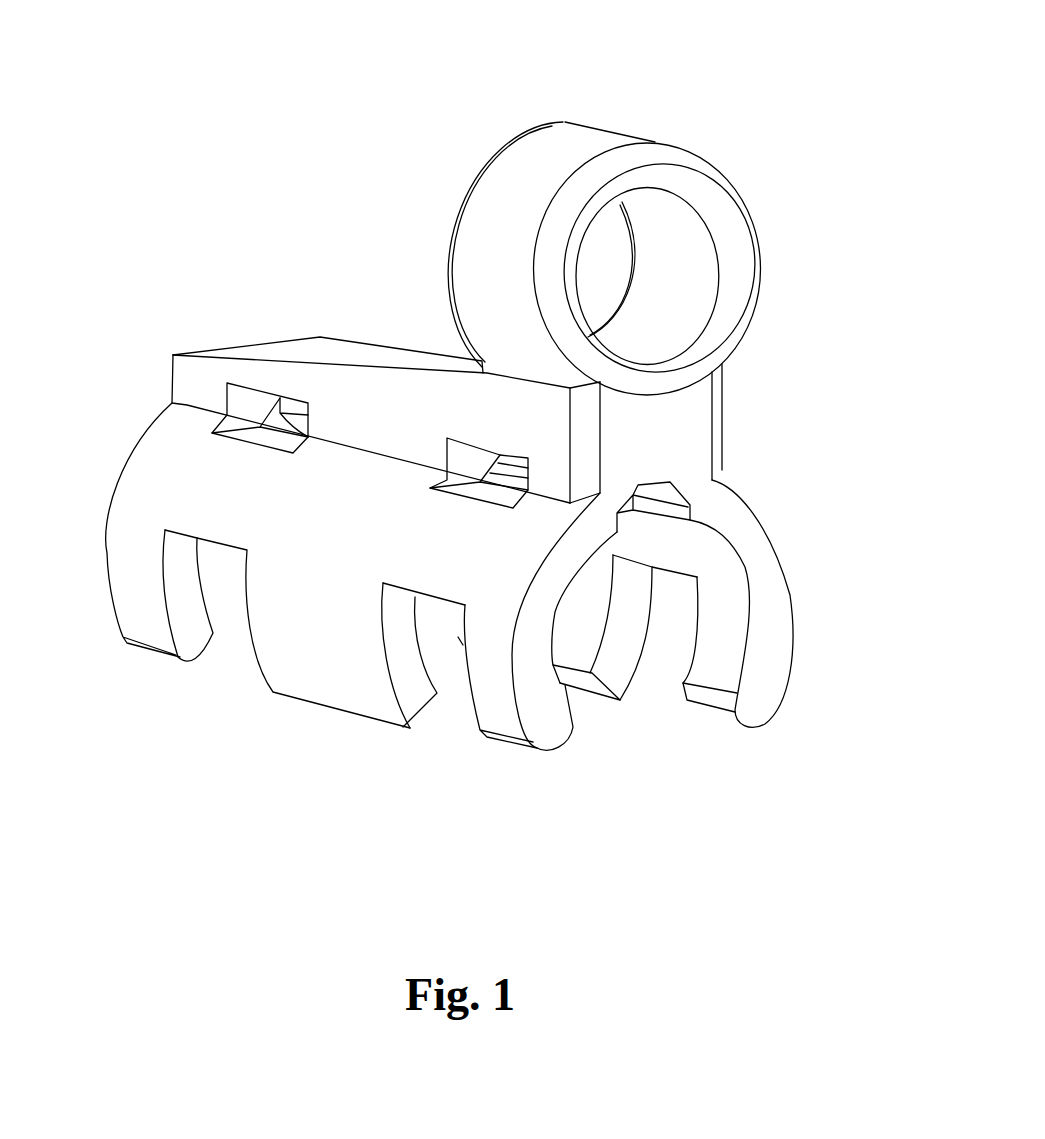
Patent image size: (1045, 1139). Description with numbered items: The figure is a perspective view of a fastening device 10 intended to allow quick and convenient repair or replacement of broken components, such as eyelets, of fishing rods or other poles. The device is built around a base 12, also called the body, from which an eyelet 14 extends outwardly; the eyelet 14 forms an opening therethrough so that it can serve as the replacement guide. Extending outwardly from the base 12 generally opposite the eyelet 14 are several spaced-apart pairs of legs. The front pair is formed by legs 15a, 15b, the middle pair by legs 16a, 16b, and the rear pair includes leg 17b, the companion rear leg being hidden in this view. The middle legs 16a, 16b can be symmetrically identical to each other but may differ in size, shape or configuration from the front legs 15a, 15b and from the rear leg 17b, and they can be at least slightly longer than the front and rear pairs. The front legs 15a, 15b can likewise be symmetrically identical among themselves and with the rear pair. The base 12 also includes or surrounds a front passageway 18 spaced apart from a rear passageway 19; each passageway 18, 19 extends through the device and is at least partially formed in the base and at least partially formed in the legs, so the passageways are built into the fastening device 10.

The fastening device 10 is at (226, 87).
The base 12 is at (362, 410).
The eyelet 14 is at (595, 147).
The front leg 15a is at (768, 578).
The front leg 15b is at (545, 712).
The middle leg 16a is at (623, 650).
The middle leg 16b is at (333, 680).
The rear leg 17b is at (130, 598).
The front passageway 18 is at (478, 490).
The rear passageway 19 is at (238, 428).